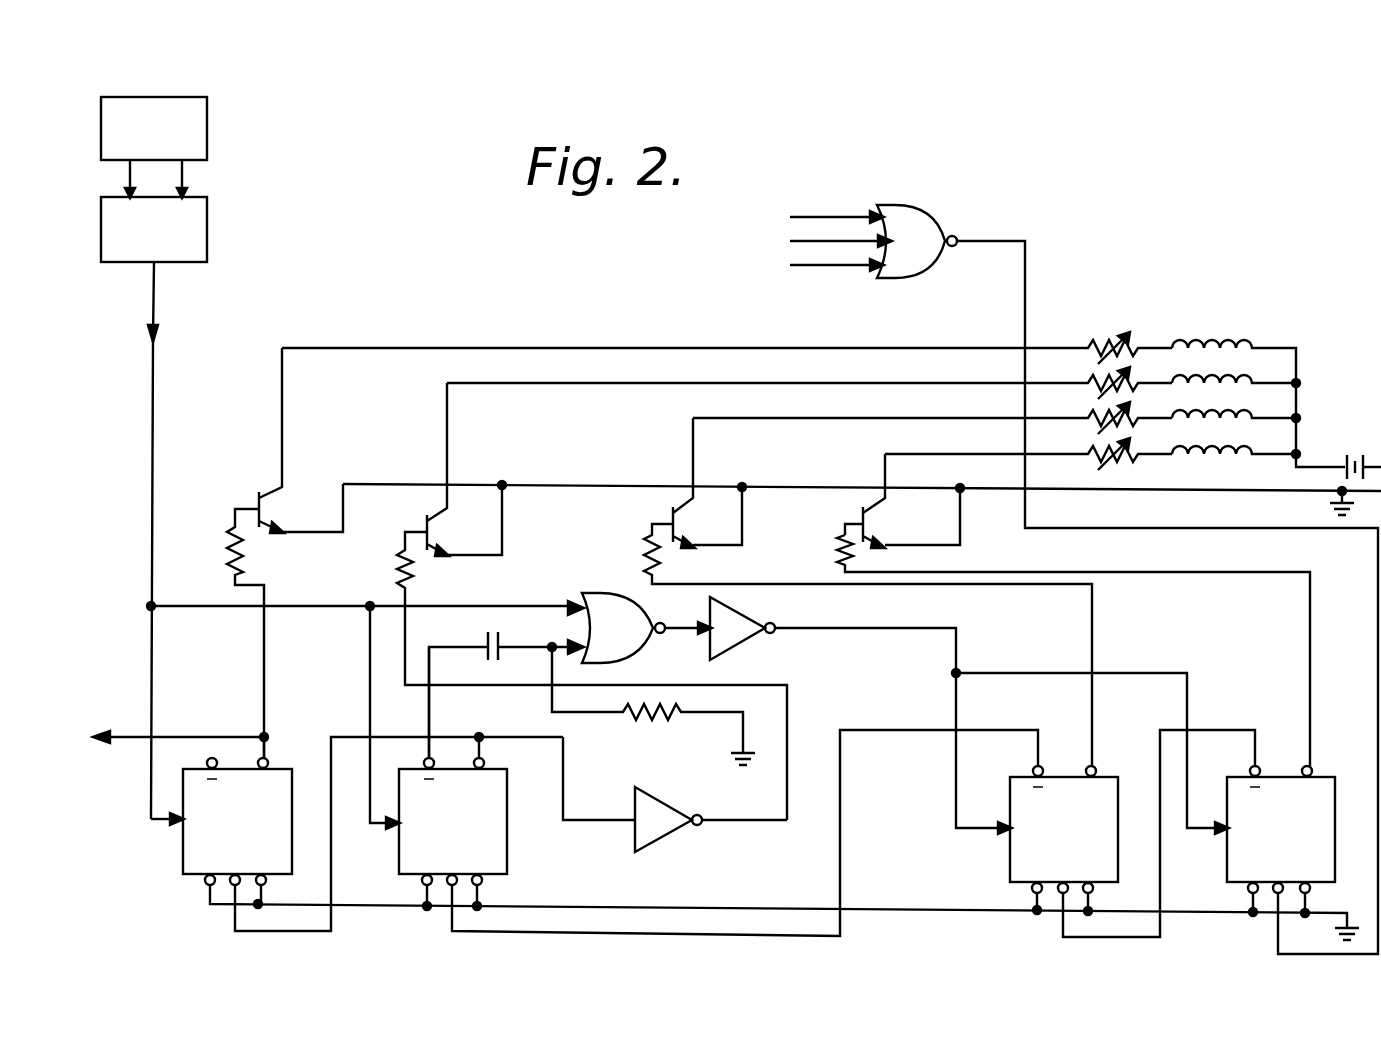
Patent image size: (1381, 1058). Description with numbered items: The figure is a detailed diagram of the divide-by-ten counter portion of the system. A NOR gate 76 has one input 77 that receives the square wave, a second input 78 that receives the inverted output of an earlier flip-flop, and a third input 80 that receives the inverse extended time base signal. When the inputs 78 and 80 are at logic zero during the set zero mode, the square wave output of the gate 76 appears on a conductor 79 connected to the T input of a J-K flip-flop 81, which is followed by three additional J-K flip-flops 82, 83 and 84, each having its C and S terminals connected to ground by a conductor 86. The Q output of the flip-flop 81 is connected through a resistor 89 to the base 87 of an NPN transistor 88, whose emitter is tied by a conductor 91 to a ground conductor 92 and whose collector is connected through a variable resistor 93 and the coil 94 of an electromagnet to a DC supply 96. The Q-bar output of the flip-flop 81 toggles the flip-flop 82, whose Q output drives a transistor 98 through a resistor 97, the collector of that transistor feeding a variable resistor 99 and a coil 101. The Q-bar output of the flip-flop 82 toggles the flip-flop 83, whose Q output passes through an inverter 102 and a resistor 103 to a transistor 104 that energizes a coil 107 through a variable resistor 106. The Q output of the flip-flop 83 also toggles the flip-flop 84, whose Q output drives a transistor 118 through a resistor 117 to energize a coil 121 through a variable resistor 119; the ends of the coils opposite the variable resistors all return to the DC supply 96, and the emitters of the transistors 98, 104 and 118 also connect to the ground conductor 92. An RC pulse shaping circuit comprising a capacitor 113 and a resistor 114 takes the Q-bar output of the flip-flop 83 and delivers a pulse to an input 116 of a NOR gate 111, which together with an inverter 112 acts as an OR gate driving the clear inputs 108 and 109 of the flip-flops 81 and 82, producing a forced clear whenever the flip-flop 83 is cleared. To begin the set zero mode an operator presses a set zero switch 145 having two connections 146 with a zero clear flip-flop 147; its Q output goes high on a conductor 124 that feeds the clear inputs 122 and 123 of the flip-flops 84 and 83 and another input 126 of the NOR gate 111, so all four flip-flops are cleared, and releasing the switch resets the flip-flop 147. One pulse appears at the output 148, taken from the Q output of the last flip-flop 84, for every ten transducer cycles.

The set zero switch 145 is at (207, 125).
The connections 146 is at (132, 172).
The zero clear flip-flop 147 is at (207, 238).
The NOR gate 76 is at (925, 228).
The input 77 is at (832, 213).
The second input 78 is at (818, 269).
The third input 80 is at (846, 243).
The conductor 79 is at (1027, 268).
The variable resistor 119 is at (1122, 342).
The coil 121 is at (1235, 342).
The variable resistor 106 is at (1092, 388).
The coil 107 is at (1238, 385).
The variable resistor 99 is at (1092, 423).
The coil 101 is at (1238, 420).
The variable resistor 93 is at (1122, 460).
The coil 94 is at (1218, 457).
The DC supply 96 is at (1357, 458).
The ground conductor 92 is at (1080, 493).
The transistor 118 is at (250, 495).
The resistor 117 is at (228, 548).
The transistor 104 is at (422, 518).
The resistor 103 is at (398, 568).
The transistor 98 is at (660, 508).
The resistor 97 is at (645, 556).
The base 87 is at (855, 522).
The NPN transistor 88 is at (885, 516).
The resistor 89 is at (850, 556).
The conductor 91 is at (962, 512).
The conductor 124 is at (152, 578).
The input 126 is at (570, 603).
The input 116 is at (570, 644).
The capacitor 113 is at (482, 646).
The NOR gate 111 is at (628, 660).
The inverter 112 is at (745, 652).
The resistor 114 is at (635, 722).
The output 148 is at (128, 734).
The clear input 122 is at (165, 822).
The J-K flip-flop 84 is at (183, 862).
The clear input 123 is at (385, 826).
The J-K flip-flop 83 is at (507, 858).
The inverter 102 is at (660, 838).
The clear input 109 is at (975, 826).
The J-K flip-flop 82 is at (1010, 860).
The clear input 108 is at (1200, 830).
The J-K flip-flop 81 is at (1335, 818).
The conductor 86 is at (925, 914).